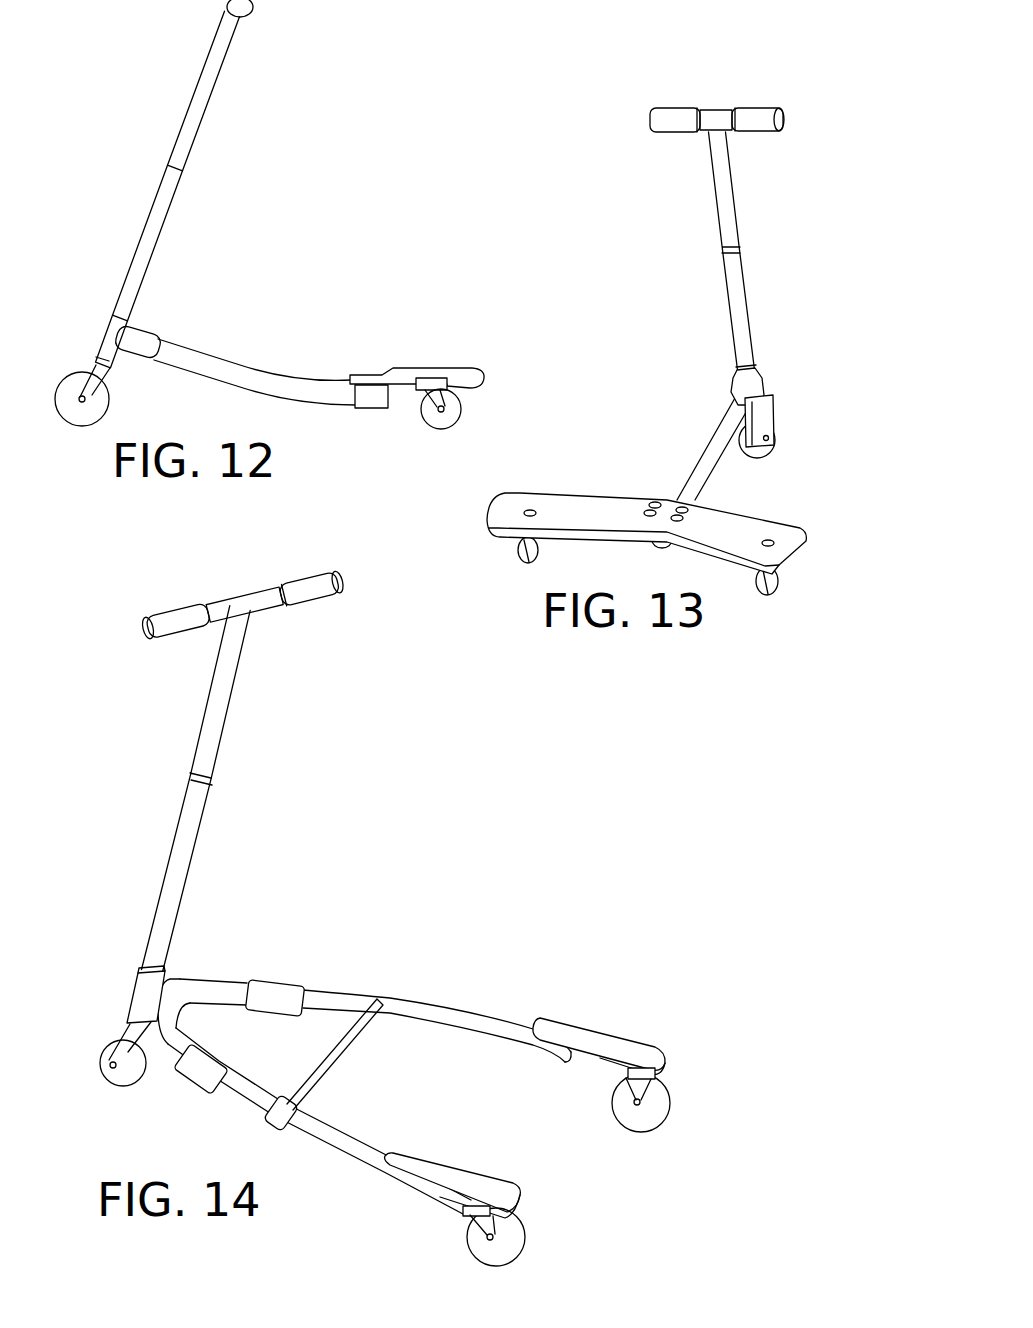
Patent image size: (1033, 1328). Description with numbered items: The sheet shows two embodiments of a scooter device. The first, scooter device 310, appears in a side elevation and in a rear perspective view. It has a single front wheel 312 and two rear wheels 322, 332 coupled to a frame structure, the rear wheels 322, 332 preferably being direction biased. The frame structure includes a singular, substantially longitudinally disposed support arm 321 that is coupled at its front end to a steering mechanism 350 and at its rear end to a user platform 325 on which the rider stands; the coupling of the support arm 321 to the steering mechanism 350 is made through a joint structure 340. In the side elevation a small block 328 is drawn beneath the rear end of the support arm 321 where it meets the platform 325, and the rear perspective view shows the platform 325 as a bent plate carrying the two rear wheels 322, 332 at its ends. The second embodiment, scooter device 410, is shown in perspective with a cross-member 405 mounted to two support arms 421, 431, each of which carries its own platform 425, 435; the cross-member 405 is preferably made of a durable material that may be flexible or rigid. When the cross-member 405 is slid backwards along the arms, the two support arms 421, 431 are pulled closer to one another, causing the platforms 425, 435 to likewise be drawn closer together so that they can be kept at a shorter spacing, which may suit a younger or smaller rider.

In FIG. 12, the scooter device 310 is at (253, 243).
In FIG. 13, the scooter device 310 is at (640, 370).
In FIG. 12, the front wheel 312 is at (67, 390).
In FIG. 13, the front wheel 312 is at (760, 453).
In FIG. 14, the front wheel 312 is at (132, 1026).
In FIG. 12, the support arm 321 is at (252, 363).
In FIG. 13, the support arm 321 is at (701, 448).
In FIG. 12, the rear wheel 322 is at (442, 427).
In FIG. 13, the rear wheel 322 is at (515, 562).
In FIG. 14, the rear wheel 322 is at (520, 1240).
In FIG. 12, the user platform 325 is at (418, 368).
In FIG. 13, the user platform 325 is at (613, 503).
In FIG. 12, the mounting bracket 328 is at (373, 407).
In FIG. 13, the mounting bracket 328 is at (662, 540).
In FIG. 13, the rear wheel 332 is at (770, 593).
In FIG. 14, the rear wheel 332 is at (658, 1113).
In FIG. 12, the joint structure 340 is at (103, 292).
In FIG. 13, the joint structure 340 is at (739, 310).
In FIG. 14, the joint structure 340 is at (177, 874).
In FIG. 12, the steering mechanism 350 is at (232, 114).
In FIG. 13, the steering mechanism 350 is at (682, 215).
In FIG. 14, the steering mechanism 350 is at (243, 677).
In FIG. 14, the cross-member 405 is at (340, 1060).
In FIG. 14, the scooter device 410 is at (425, 918).
In FIG. 14, the support arm 421 is at (347, 1136).
In FIG. 14, the platform 425 is at (465, 1177).
In FIG. 14, the support arm 431 is at (419, 1006).
In FIG. 14, the platform 435 is at (597, 1040).